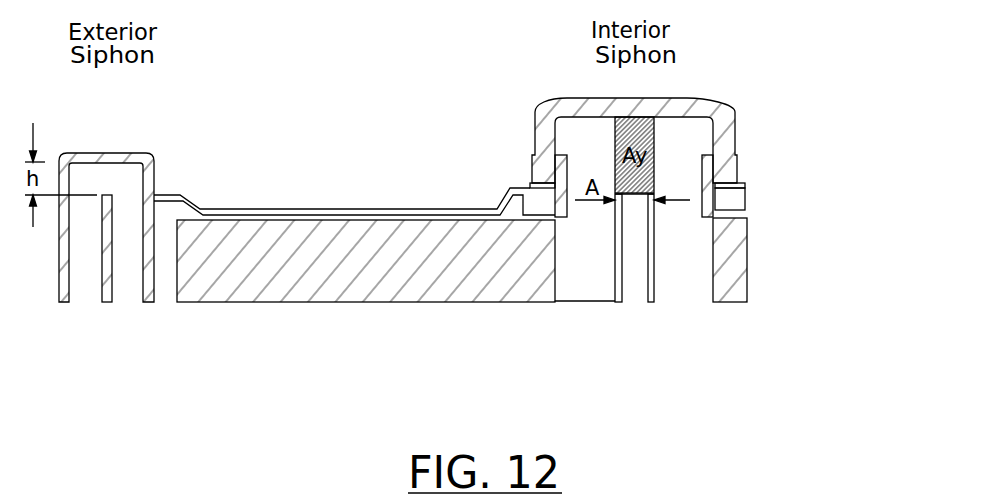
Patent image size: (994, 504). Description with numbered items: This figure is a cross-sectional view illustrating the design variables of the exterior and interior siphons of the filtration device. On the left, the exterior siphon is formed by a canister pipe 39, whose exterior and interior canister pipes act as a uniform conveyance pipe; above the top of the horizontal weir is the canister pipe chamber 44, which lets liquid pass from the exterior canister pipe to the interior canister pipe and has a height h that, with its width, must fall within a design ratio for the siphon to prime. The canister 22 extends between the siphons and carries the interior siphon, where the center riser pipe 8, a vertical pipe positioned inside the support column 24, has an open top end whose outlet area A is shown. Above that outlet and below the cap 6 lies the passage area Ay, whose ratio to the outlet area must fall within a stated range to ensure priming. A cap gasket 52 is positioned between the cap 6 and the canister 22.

The canister pipe 39 is at (118, 195).
The canister pipe chamber 44 is at (155, 221).
The canister 22 is at (384, 230).
The cap 6 is at (669, 136).
The cap gasket 52 is at (774, 176).
The support column 24 is at (759, 260).
The center riser pipe 8 is at (659, 248).